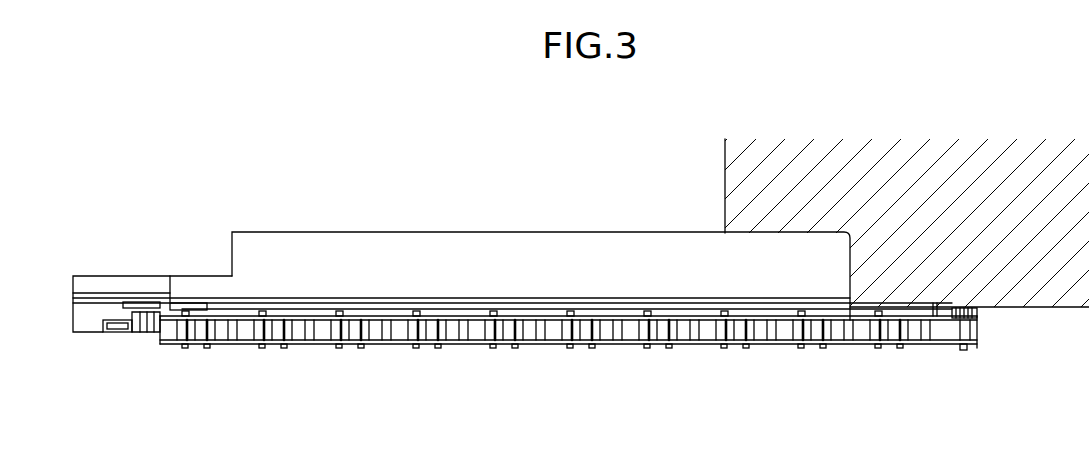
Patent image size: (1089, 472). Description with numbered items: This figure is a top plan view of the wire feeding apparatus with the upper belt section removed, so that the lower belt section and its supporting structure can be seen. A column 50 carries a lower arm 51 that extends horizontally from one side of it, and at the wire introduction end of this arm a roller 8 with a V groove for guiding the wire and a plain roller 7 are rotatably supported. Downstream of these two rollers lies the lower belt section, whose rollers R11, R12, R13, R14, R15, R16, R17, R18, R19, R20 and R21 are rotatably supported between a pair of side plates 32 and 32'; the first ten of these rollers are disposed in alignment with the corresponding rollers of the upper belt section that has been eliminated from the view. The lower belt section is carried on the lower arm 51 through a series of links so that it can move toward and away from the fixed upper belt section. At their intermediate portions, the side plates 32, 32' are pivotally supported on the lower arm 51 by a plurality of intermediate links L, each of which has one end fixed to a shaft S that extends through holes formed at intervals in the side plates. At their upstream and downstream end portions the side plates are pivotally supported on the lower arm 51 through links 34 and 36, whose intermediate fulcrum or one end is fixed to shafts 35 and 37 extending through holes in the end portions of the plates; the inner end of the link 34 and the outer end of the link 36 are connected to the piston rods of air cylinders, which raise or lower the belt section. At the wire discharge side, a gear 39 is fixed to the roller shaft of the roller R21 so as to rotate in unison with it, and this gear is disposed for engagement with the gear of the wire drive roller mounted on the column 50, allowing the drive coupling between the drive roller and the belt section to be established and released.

The plain roller 7 is at (157, 325).
The roller with V groove 8 is at (117, 320).
The side plate 32 is at (211, 379).
The side plate 32' is at (474, 332).
The link 34 is at (235, 310).
The shaft 35 is at (235, 340).
The link 36 is at (935, 318).
The shaft 37 is at (903, 330).
The gear 39 is at (963, 308).
The column 50 is at (870, 205).
The lower arm 51 is at (630, 245).
The intermediate links L is at (373, 312).
The shafts S is at (387, 336).
The roller R11 is at (181, 335).
The roller R12 is at (262, 338).
The roller R13 is at (345, 338).
The roller R14 is at (420, 338).
The roller R15 is at (492, 338).
The roller R16 is at (570, 338).
The roller R17 is at (645, 338).
The roller R18 is at (724, 338).
The roller R19 is at (797, 338).
The roller R20 is at (875, 338).
The roller R21 is at (977, 337).